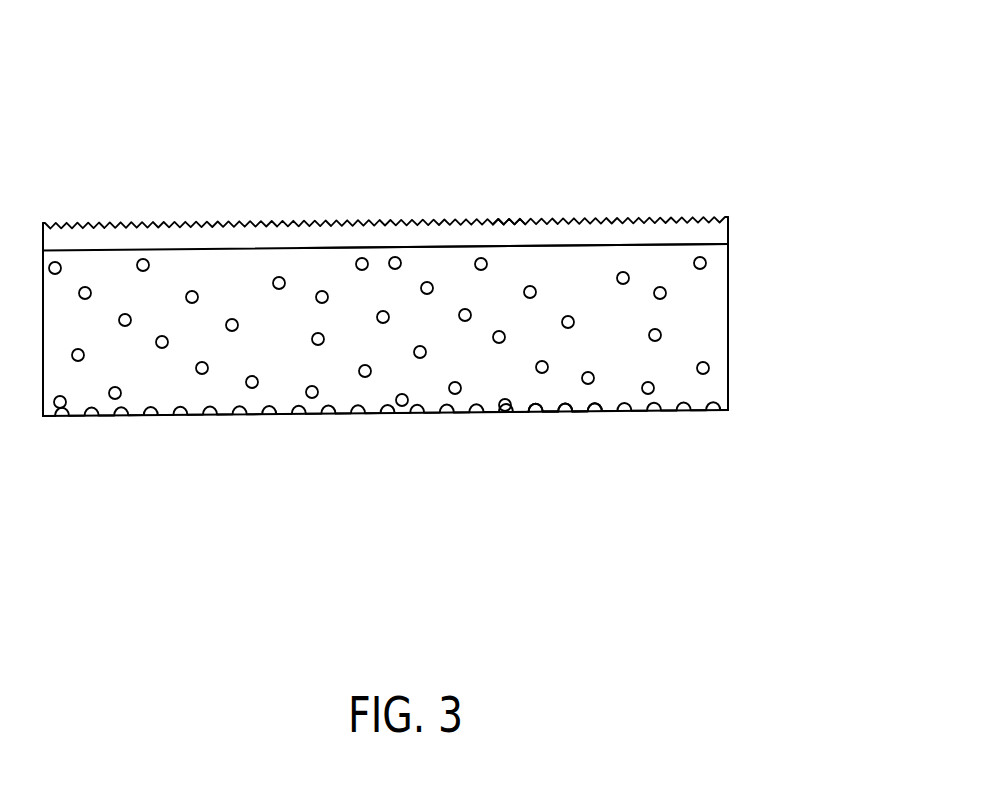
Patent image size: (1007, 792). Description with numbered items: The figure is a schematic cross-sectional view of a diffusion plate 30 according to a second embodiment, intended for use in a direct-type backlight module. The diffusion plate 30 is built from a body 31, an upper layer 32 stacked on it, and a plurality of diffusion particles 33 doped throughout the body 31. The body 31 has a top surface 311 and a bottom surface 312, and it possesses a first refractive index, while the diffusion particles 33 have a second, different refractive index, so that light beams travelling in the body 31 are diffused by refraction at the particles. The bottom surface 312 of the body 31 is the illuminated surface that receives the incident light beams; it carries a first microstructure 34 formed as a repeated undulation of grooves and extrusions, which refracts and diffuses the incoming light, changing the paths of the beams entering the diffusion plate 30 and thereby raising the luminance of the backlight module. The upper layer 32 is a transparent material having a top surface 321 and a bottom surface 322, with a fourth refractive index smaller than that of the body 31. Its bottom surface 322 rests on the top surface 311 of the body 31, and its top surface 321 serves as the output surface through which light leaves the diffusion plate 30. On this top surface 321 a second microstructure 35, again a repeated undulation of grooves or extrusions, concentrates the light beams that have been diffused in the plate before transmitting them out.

The diffusion plate 30 is at (757, 113).
The body 31 is at (707, 307).
The top surface 311 is at (684, 244).
The bottom surface 312 is at (543, 411).
The upper layer 32 is at (728, 234).
The top surface 321 is at (545, 216).
The bottom surface 322 is at (343, 247).
The diffusion particles 33 is at (706, 367).
The first microstructure 34 is at (558, 406).
The second microstructure 35 is at (513, 217).